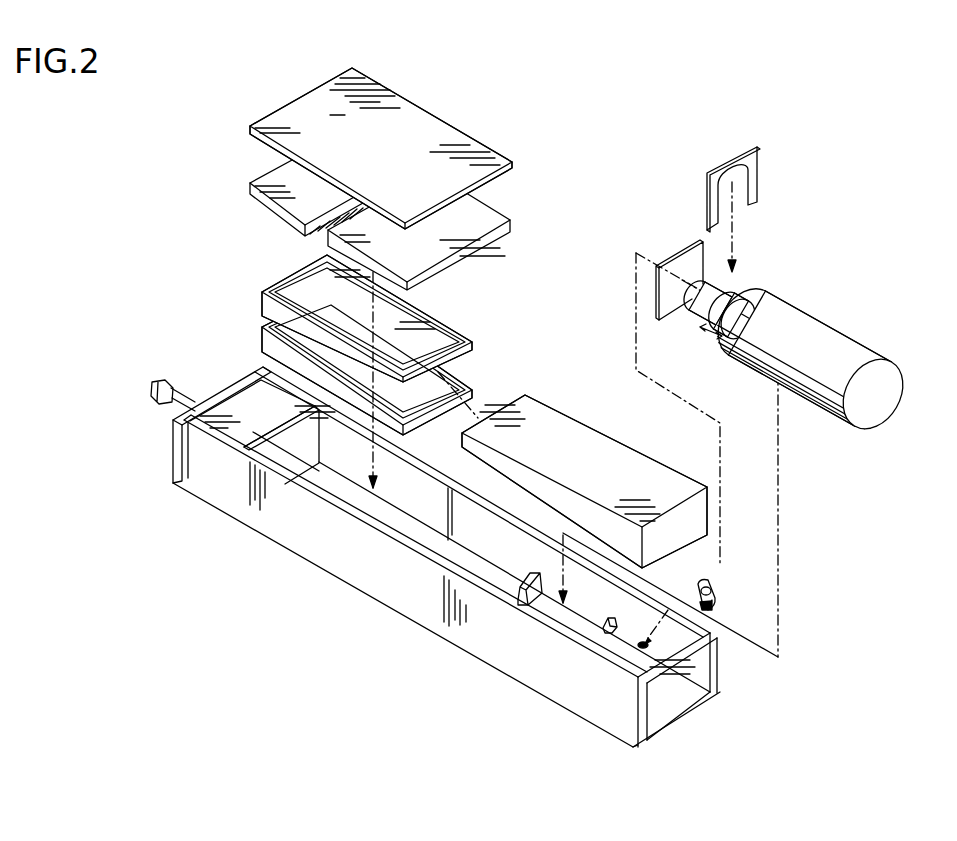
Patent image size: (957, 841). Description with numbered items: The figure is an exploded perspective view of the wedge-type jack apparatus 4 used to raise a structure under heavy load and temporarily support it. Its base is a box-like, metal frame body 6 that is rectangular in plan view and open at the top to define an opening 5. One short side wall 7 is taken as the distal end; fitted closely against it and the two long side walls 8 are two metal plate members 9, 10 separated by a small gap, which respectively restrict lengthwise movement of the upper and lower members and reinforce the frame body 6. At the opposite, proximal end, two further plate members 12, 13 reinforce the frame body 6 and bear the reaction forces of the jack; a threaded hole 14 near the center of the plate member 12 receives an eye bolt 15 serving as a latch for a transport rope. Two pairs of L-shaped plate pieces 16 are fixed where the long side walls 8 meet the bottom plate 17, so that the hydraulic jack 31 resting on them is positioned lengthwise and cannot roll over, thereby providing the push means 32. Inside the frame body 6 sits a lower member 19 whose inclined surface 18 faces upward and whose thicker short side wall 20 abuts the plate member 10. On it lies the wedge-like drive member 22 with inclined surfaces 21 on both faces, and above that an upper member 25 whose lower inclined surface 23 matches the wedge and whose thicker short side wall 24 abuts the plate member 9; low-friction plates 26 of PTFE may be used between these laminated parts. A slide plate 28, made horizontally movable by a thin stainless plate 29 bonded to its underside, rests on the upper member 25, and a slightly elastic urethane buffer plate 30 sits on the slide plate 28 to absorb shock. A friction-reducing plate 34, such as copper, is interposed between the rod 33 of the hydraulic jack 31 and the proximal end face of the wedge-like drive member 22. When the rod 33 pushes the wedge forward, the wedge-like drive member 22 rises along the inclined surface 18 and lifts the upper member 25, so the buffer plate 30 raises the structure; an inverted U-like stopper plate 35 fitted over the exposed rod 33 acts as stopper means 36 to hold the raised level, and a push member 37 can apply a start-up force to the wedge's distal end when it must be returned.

The wedge-type jack apparatus 4 is at (188, 306).
The opening 5 is at (408, 478).
The frame body 6 is at (298, 561).
The short side wall 7 is at (172, 456).
The long side walls 8 is at (447, 490).
The plate member 9 is at (262, 413).
The plate member 10 is at (300, 460).
The plate member 12 is at (698, 648).
The plate member 13 is at (686, 692).
The threaded hole 14 is at (652, 646).
The eye bolt 15 is at (718, 585).
The plate pieces 16 is at (527, 580).
The bottom plate 17 is at (395, 522).
The inclined surface 18 is at (455, 372).
The lower member 19 is at (250, 354).
The short side wall 20 is at (258, 340).
The inclined surfaces 21 is at (522, 496).
The wedge-like drive member 22 is at (652, 456).
The inclined surface 23 is at (352, 366).
The short side wall 24 is at (260, 296).
The upper member 25 is at (476, 337).
The low-friction plates 26 is at (436, 392).
The slide plate 28 is at (490, 215).
The stainless plate 29 is at (305, 233).
The buffer plate 30 is at (381, 148).
The hydraulic jack 31 is at (856, 345).
The push means 32 is at (818, 305).
The rod 33 is at (703, 285).
The plate 34 is at (688, 248).
The stopper plates 35 is at (757, 190).
The stopper means 36 is at (763, 148).
The push member 37 is at (170, 402).